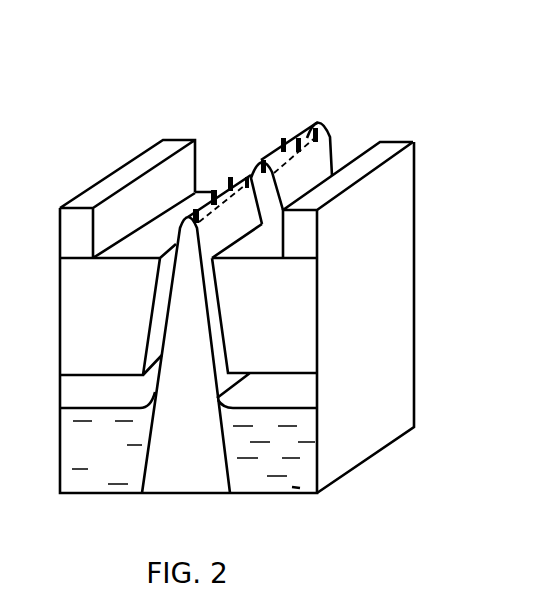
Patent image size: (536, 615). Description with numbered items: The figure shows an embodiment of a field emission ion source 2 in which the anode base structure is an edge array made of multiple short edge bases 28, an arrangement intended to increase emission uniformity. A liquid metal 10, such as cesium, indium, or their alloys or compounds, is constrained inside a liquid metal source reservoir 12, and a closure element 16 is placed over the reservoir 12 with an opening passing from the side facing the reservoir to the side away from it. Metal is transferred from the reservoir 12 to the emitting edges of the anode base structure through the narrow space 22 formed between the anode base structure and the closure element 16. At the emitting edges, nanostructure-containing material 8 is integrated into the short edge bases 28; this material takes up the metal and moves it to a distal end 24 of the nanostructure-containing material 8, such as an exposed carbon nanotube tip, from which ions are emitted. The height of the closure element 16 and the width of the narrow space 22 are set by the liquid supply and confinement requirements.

The field emission ion source 2 is at (212, 70).
The nanostructure-containing material 8 is at (223, 183).
The liquid metal 10 is at (91, 458).
The liquid metal source reservoir 12 is at (303, 487).
The closure element 16 is at (257, 330).
The narrow space 22 is at (156, 304).
The distal end 24 is at (228, 178).
The short edge bases 28 is at (220, 236).